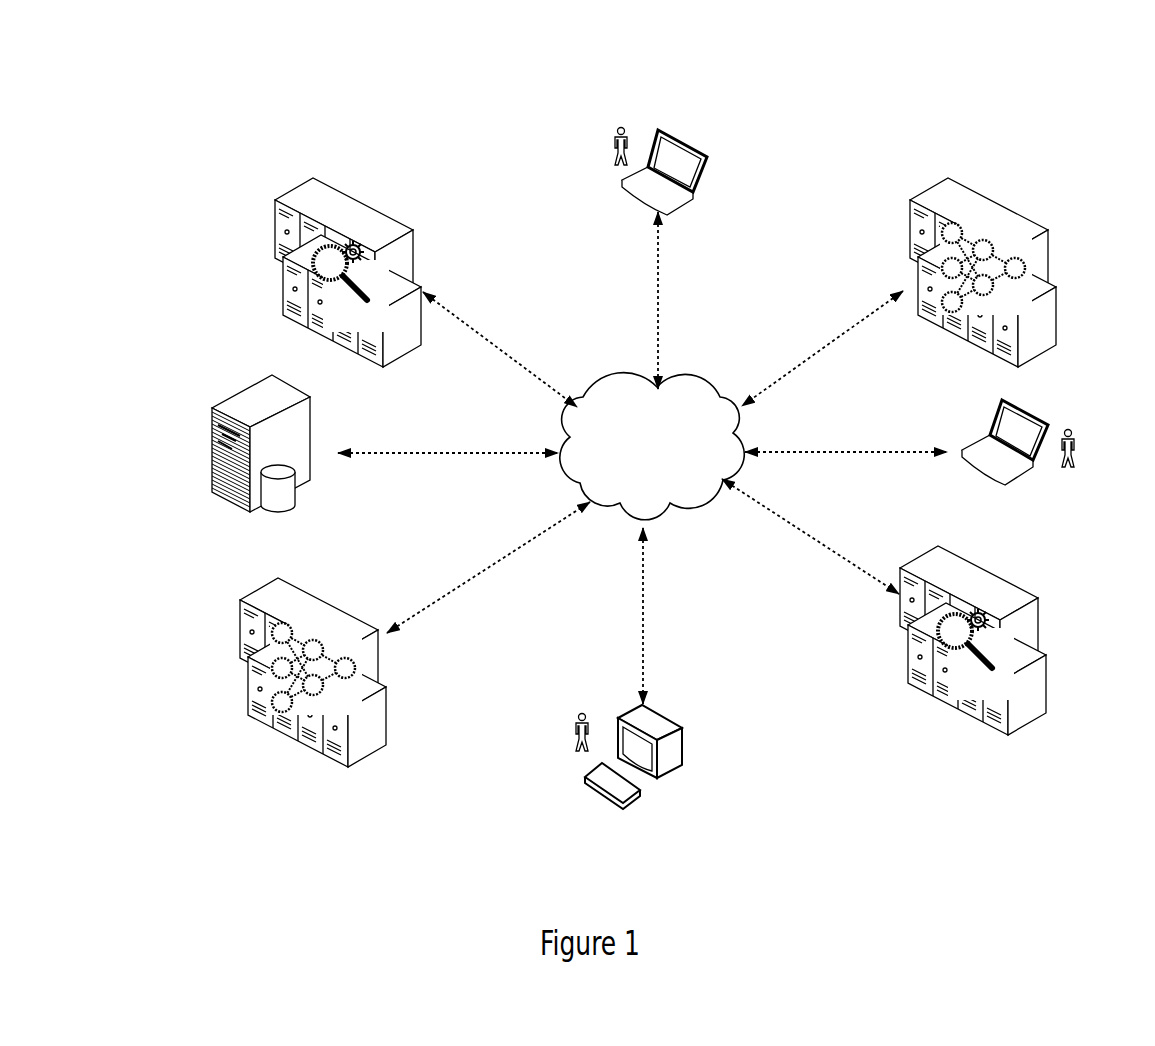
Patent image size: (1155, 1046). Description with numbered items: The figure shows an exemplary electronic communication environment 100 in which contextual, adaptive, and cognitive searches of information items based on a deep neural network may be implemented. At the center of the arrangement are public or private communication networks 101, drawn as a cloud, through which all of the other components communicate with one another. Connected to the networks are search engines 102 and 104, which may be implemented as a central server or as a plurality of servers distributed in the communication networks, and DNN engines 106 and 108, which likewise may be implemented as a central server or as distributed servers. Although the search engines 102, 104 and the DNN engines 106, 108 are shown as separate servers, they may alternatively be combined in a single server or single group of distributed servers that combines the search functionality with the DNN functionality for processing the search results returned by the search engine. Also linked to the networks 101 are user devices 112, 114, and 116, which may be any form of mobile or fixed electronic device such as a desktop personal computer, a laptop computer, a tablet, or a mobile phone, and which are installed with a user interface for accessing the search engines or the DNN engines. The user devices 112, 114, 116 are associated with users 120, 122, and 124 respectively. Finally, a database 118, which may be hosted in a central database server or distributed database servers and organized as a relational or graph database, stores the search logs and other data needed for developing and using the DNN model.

The electronic communication environment 100 is at (50, 88).
The communication networks 101 is at (720, 397).
The search engine 102 is at (403, 220).
The search engine 104 is at (1028, 590).
The DNN engine 106 is at (1037, 220).
The DNN engine 108 is at (328, 600).
The user device 112 is at (708, 202).
The user device 114 is at (1017, 477).
The user device 116 is at (698, 782).
The database 118 is at (320, 465).
The user 120 is at (625, 113).
The user 122 is at (1075, 430).
The user 124 is at (582, 703).